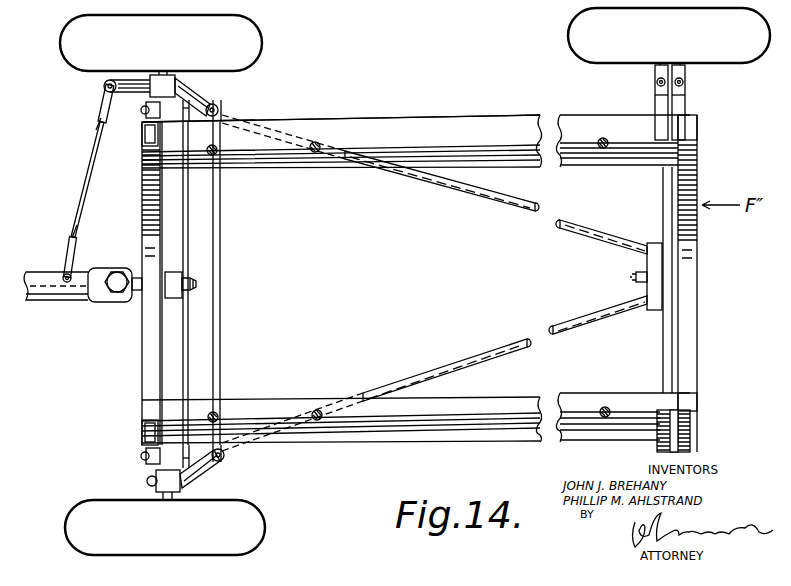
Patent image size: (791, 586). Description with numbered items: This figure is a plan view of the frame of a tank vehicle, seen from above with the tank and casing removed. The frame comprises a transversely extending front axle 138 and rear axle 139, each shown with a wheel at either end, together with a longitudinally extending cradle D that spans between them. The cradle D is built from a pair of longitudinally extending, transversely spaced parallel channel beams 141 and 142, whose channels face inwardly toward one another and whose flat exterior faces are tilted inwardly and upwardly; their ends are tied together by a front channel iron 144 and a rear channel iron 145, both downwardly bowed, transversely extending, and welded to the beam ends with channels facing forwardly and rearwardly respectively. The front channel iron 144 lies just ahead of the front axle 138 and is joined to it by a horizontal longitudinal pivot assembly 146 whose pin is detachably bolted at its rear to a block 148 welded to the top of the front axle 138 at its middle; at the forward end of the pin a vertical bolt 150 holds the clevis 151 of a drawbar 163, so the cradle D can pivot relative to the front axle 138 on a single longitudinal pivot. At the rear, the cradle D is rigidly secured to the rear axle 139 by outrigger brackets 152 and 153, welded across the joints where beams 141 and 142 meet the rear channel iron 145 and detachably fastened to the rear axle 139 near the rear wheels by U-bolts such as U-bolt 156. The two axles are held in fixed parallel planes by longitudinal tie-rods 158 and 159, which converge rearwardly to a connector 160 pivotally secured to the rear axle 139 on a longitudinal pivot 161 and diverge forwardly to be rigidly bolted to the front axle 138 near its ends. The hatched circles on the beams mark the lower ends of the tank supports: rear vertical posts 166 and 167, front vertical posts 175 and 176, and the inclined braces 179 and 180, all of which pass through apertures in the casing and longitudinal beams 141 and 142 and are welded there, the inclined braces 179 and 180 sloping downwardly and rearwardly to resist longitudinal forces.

The front axle 138 is at (175, 357).
The rear axle 139 is at (676, 335).
The channel beam 141 is at (588, 393).
The channel beam 142 is at (580, 117).
The front channel iron 144 is at (147, 419).
The rear channel iron 145 is at (690, 398).
The pivot assembly 146 is at (137, 293).
The block 148 is at (174, 277).
The vertical bolt 150 is at (118, 276).
The clevis 151 is at (100, 297).
The outrigger bracket 152 is at (696, 428).
The outrigger bracket 153 is at (682, 107).
The U-bolt 156 is at (656, 84).
The tie-rod 158 is at (560, 327).
The tie-rod 159 is at (563, 230).
The connector 160 is at (654, 243).
The longitudinal pivot 161 is at (635, 277).
The drawbar 163 is at (33, 272).
The vertical post 166 is at (606, 392).
The vertical post 167 is at (606, 148).
The vertical post 175 is at (216, 413).
The vertical post 176 is at (216, 154).
The inclined brace 179 is at (319, 410).
The inclined brace 180 is at (316, 152).
The cradle D is at (385, 117).